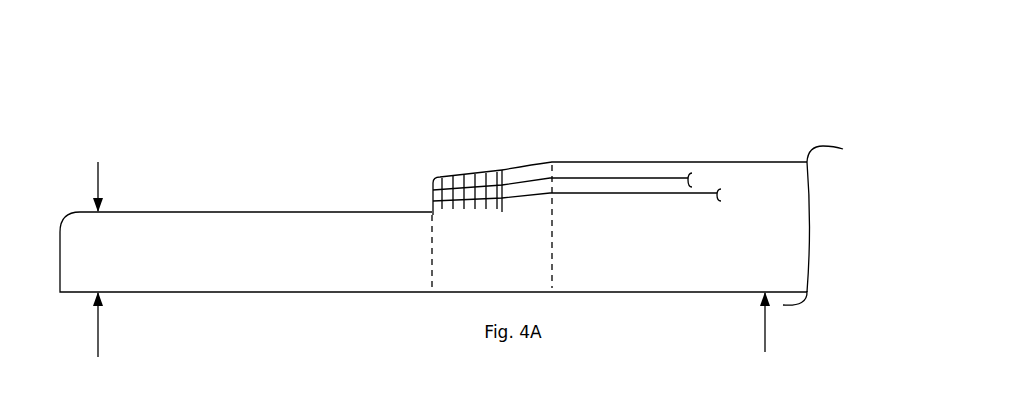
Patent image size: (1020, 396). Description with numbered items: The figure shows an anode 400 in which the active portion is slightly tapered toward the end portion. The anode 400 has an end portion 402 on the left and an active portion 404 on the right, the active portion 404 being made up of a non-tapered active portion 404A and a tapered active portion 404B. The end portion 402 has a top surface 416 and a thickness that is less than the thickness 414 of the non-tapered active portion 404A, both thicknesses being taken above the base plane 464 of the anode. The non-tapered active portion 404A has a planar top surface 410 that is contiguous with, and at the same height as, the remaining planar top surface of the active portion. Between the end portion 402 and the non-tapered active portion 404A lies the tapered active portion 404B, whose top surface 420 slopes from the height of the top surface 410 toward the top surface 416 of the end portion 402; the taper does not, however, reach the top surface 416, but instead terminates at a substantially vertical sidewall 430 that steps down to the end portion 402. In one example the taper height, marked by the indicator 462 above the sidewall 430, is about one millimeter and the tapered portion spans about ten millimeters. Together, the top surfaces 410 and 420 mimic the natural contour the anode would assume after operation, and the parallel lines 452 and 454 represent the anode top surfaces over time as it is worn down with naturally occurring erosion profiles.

The anode 400 is at (702, 62).
The end portion 402 is at (246, 259).
The active portion 404 is at (621, 257).
The non-tapered active portion 404A is at (791, 188).
The tapered active portion 404B is at (447, 273).
The top surface of non-tapered active portion 410 is at (617, 161).
The thickness of non-tapered active portion 414 is at (764, 161).
The top surface of end portion 416 is at (272, 212).
The top surface of tapered active portion 420 is at (522, 167).
The substantially vertical sidewall 430 is at (432, 196).
The parallel line 452 is at (664, 178).
The parallel line 454 is at (708, 193).
The thickness indicator at bonding block 462 is at (448, 174).
The base plane 464 is at (610, 291).